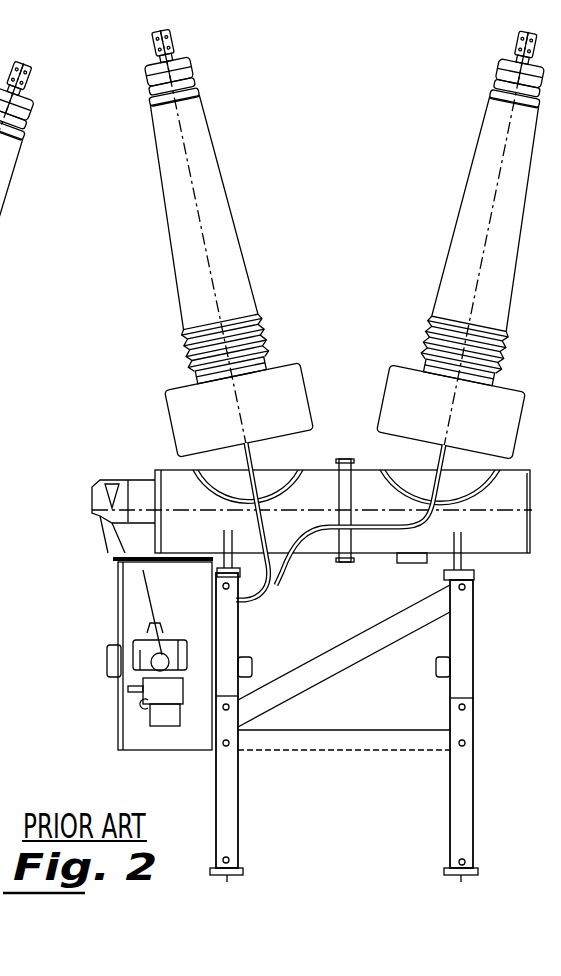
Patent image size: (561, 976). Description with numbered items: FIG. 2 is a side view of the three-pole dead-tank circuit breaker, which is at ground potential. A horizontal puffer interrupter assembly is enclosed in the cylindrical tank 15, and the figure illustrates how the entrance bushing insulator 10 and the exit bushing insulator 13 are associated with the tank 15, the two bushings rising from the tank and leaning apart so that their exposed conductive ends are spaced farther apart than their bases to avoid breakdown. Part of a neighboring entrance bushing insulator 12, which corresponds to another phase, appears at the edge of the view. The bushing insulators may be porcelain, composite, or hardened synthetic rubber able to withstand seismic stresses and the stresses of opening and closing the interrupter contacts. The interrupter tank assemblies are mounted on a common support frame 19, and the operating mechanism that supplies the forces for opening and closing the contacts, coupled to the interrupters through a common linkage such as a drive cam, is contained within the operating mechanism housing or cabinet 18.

The entrance bushing insulator 10 is at (462, 217).
The entrance bushing insulator 12 is at (0, 197).
The exit bushing insulator 13 is at (217, 200).
The cylindrical tank 15 is at (322, 460).
The operating mechanism housing or cabinet 18 is at (133, 724).
The common support frame 19 is at (198, 798).